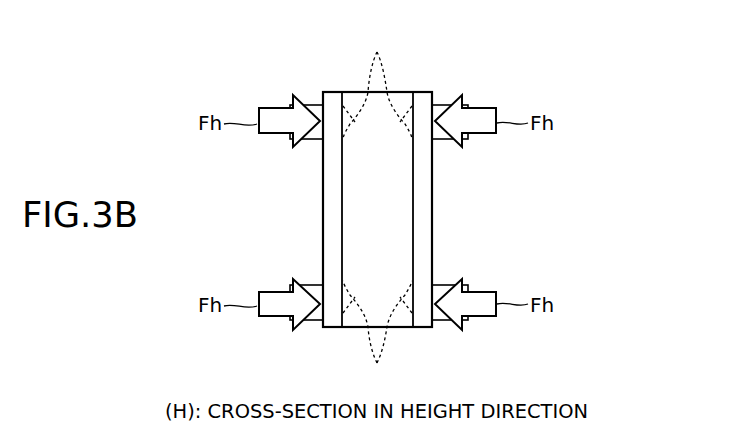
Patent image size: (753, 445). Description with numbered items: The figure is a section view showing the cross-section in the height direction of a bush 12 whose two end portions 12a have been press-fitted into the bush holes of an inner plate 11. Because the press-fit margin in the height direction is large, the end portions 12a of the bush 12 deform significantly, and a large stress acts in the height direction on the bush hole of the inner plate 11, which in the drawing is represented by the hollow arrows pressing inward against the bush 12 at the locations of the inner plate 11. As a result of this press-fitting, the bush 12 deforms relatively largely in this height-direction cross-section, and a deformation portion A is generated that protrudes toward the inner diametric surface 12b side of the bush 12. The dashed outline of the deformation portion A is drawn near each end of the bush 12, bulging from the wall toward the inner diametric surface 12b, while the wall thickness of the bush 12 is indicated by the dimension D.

The inner plate 11 is at (438, 105).
The bush 12 is at (408, 210).
The end portion of the bush 12a is at (335, 110).
The inner diametric surface 12b is at (344, 222).
The deformation portion A is at (377, 208).
The wall thickness D is at (442, 239).